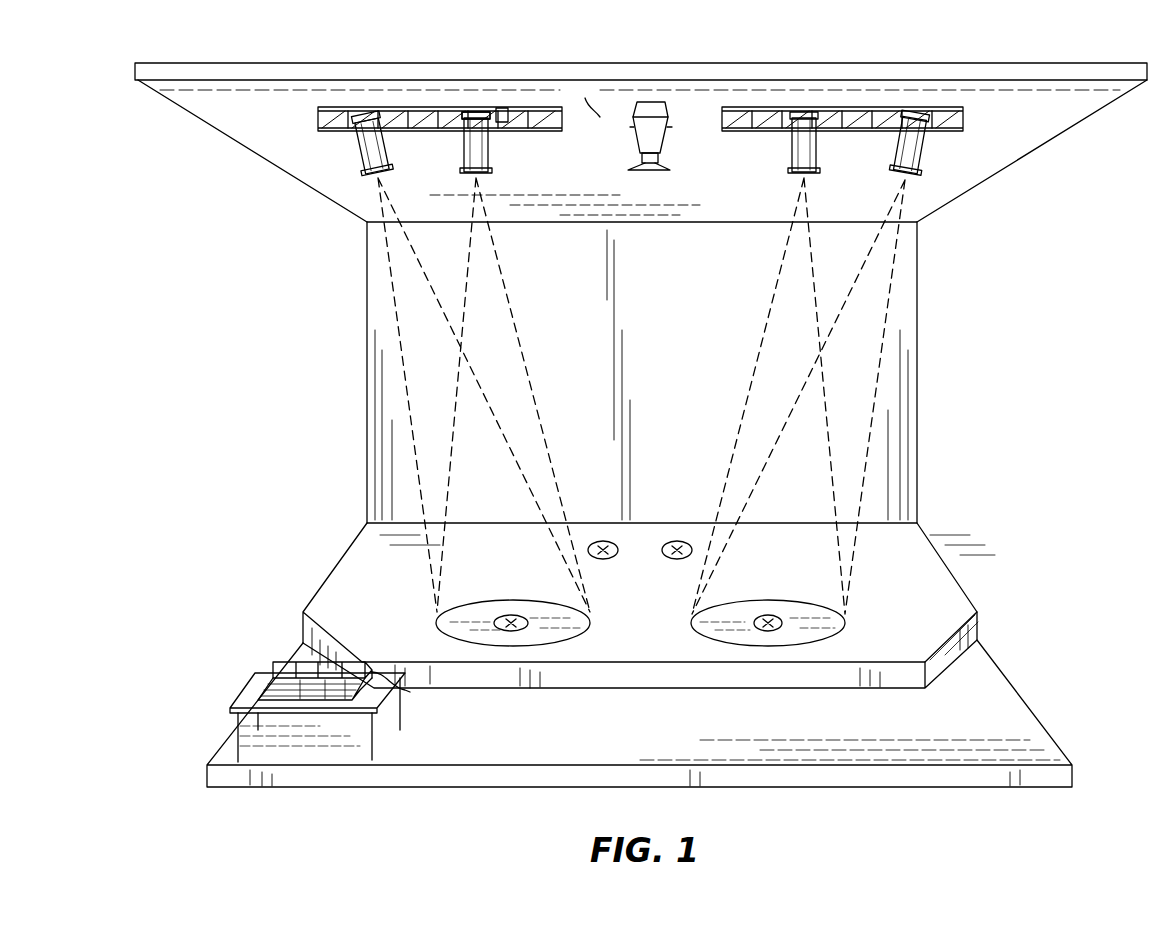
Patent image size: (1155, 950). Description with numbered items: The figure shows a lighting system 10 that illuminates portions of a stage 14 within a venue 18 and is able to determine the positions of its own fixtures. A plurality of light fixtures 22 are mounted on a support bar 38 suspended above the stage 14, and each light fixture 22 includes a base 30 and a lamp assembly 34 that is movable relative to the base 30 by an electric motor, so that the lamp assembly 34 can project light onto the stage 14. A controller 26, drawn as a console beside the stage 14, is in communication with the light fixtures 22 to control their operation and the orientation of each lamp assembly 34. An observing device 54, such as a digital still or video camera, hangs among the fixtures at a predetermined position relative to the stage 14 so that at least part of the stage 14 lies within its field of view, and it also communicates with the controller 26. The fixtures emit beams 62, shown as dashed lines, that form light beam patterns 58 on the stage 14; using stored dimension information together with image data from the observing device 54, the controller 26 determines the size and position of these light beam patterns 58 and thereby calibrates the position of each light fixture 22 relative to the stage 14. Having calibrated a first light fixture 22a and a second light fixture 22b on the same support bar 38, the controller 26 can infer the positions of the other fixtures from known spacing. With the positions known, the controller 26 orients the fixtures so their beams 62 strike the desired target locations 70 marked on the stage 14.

The lighting system 10 is at (165, 265).
The stage 14 is at (348, 590).
The venue 18 is at (1005, 268).
The light fixtures 22 is at (790, 147).
The first light fixture 22a is at (360, 155).
The second light fixture 22b is at (490, 155).
The controller 26 is at (275, 672).
The base 30 is at (500, 118).
The lamp assembly 34 is at (463, 157).
The support bar 38 is at (323, 118).
The observing device 54 is at (672, 108).
The light beam patterns 58 is at (598, 620).
The beams 62 is at (517, 337).
The target locations 70 is at (603, 541).